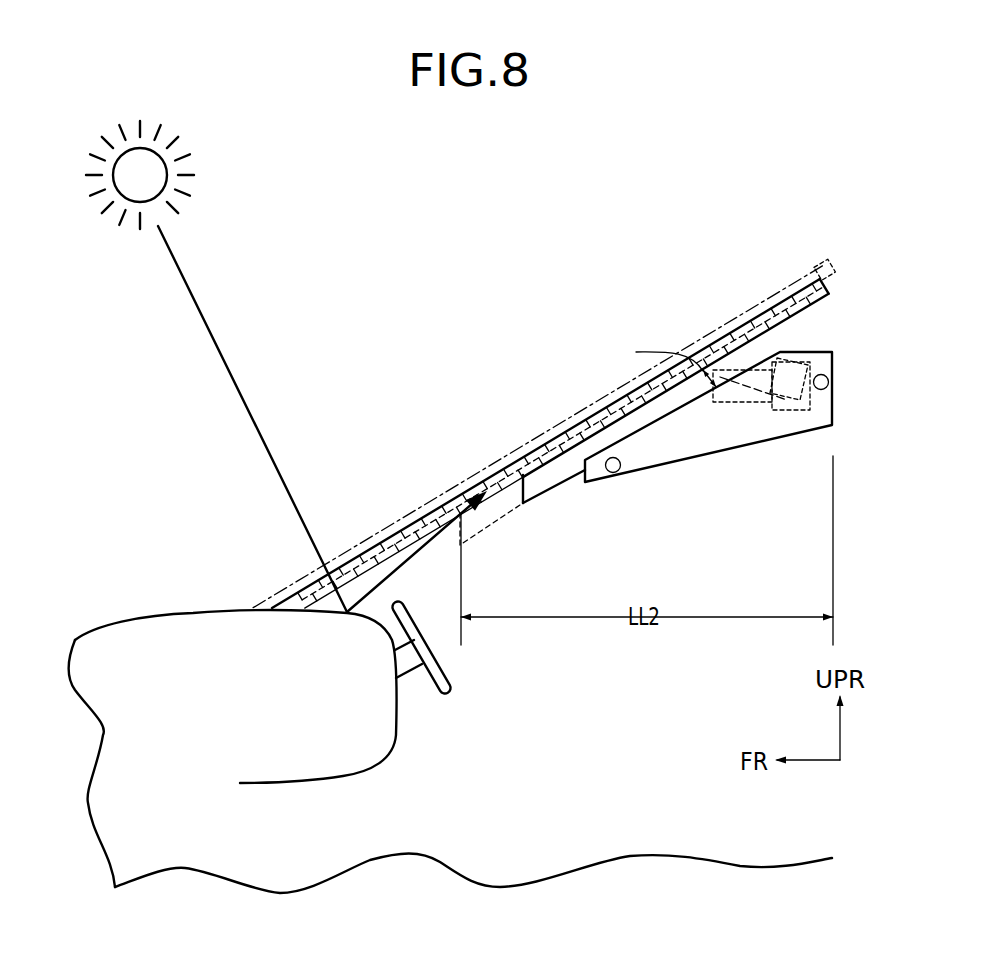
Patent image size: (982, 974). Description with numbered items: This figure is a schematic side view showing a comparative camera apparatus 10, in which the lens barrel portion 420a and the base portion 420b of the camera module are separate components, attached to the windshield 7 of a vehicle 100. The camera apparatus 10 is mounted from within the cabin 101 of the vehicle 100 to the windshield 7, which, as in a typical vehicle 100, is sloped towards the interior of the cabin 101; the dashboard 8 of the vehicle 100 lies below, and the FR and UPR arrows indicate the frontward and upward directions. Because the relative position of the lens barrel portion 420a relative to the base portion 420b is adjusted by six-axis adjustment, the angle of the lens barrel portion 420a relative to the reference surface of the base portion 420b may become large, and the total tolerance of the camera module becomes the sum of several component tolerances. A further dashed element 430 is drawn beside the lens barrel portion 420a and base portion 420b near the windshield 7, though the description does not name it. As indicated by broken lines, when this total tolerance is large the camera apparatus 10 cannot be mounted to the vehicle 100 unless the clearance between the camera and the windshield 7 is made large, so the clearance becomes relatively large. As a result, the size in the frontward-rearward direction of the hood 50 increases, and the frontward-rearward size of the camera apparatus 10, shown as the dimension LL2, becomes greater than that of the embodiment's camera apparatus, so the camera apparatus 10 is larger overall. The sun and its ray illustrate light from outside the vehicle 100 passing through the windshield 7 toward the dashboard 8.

The vehicle 100 is at (563, 434).
The windshield 7 is at (766, 338).
The lens barrel portion 420a is at (718, 370).
The base portion 420b is at (808, 362).
The sensor unit 430 is at (808, 350).
The camera apparatus 10 is at (837, 405).
The hood 50 is at (503, 514).
The dashboard 8 is at (397, 715).
The cabin 101 is at (536, 850).